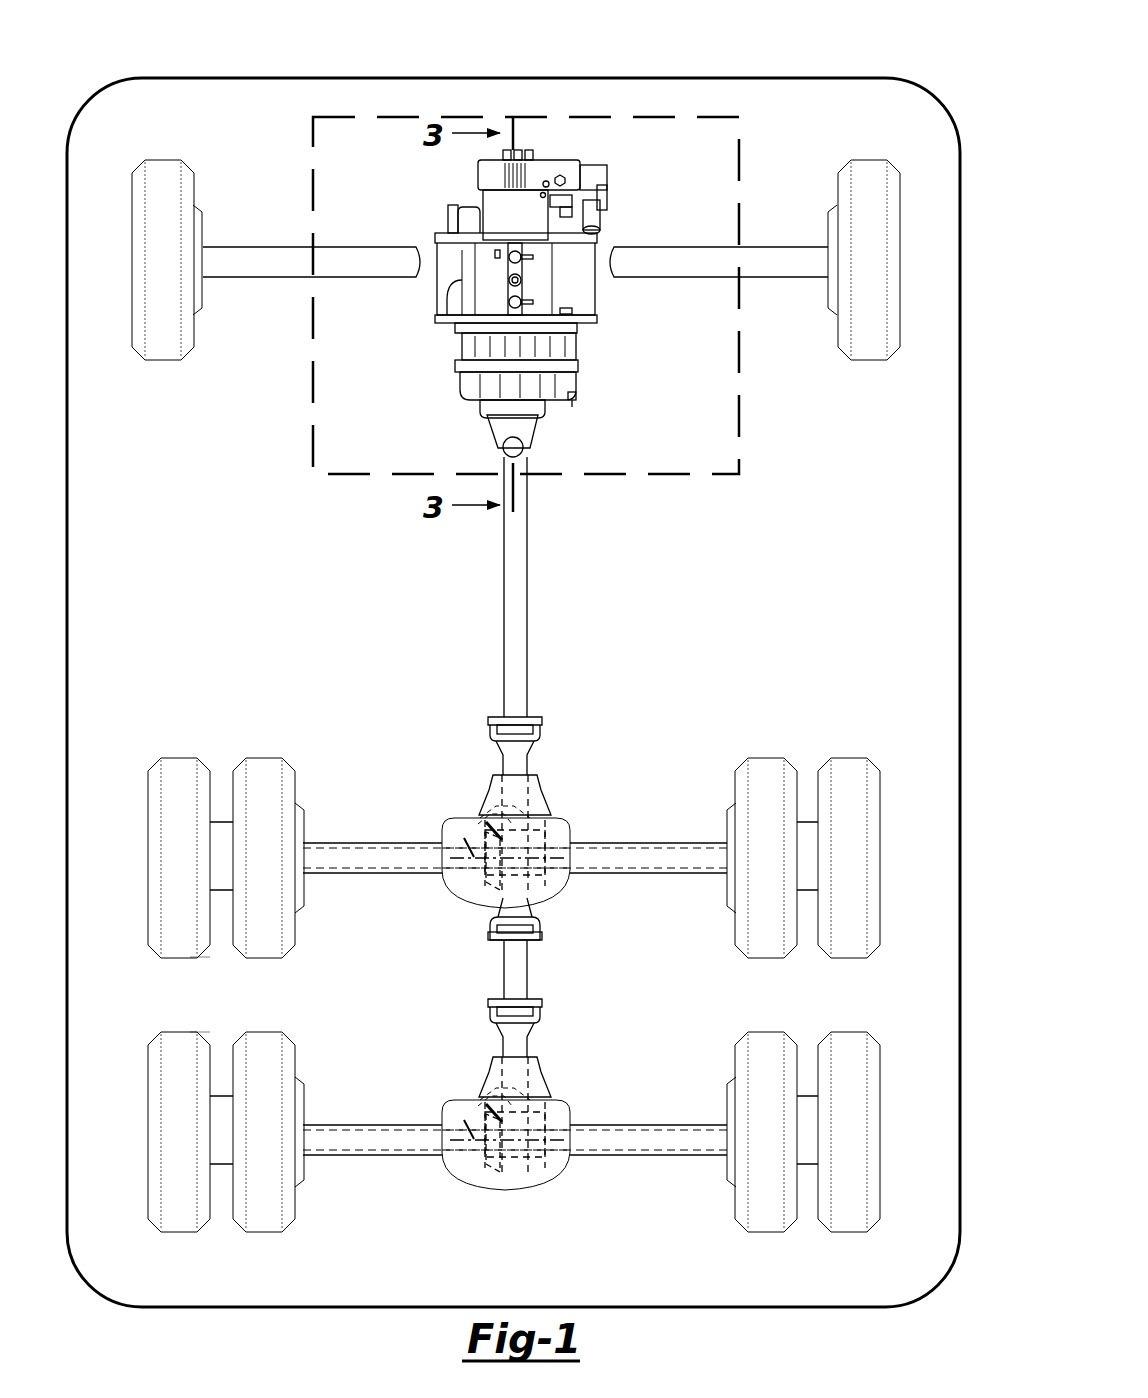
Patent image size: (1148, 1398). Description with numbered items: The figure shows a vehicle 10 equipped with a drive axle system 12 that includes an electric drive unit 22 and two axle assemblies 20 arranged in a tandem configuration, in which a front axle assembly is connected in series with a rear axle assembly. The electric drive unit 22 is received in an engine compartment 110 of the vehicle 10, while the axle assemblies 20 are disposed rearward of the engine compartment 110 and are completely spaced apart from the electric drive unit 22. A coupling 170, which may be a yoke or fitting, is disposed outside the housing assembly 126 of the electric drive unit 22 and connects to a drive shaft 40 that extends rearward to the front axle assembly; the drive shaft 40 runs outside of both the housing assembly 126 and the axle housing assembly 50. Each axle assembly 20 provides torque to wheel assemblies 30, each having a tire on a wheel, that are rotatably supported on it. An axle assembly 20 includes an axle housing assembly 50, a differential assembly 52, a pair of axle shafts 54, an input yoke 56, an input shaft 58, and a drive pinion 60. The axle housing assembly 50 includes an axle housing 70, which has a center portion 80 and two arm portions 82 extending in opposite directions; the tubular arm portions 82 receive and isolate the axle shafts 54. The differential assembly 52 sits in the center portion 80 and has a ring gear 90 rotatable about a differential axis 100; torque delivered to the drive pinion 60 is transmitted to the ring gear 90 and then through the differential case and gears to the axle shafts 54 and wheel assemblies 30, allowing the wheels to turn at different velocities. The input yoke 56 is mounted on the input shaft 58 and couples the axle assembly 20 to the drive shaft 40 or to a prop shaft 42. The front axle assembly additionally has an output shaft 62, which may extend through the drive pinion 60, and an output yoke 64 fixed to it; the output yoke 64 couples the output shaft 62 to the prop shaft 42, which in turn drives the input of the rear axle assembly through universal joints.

The vehicle 10 is at (746, 76).
The drive axle system 12 is at (260, 566).
The axle assembly 20 is at (136, 845).
The electric drive unit 22 is at (456, 182).
The wheel assembly 30 is at (262, 964).
The drive shaft 40 is at (528, 603).
The prop shaft 42 is at (500, 960).
The axle housing assembly 50 is at (548, 820).
The differential assembly 52 is at (540, 830).
The axle shaft 54 is at (366, 845).
The input yoke 56 is at (542, 717).
The input shaft 58 is at (528, 752).
The drive pinion 60 is at (490, 820).
The output shaft 62 is at (500, 908).
The output yoke 64 is at (545, 933).
The axle housing 70 is at (557, 1024).
The center portion 80 is at (555, 882).
The arm portion 82 is at (326, 843).
The ring gear 90 is at (481, 882).
The differential axis 100 is at (463, 815).
The engine compartment 110 is at (740, 447).
The housing assembly 126 is at (576, 400).
The coupling 170 is at (493, 436).